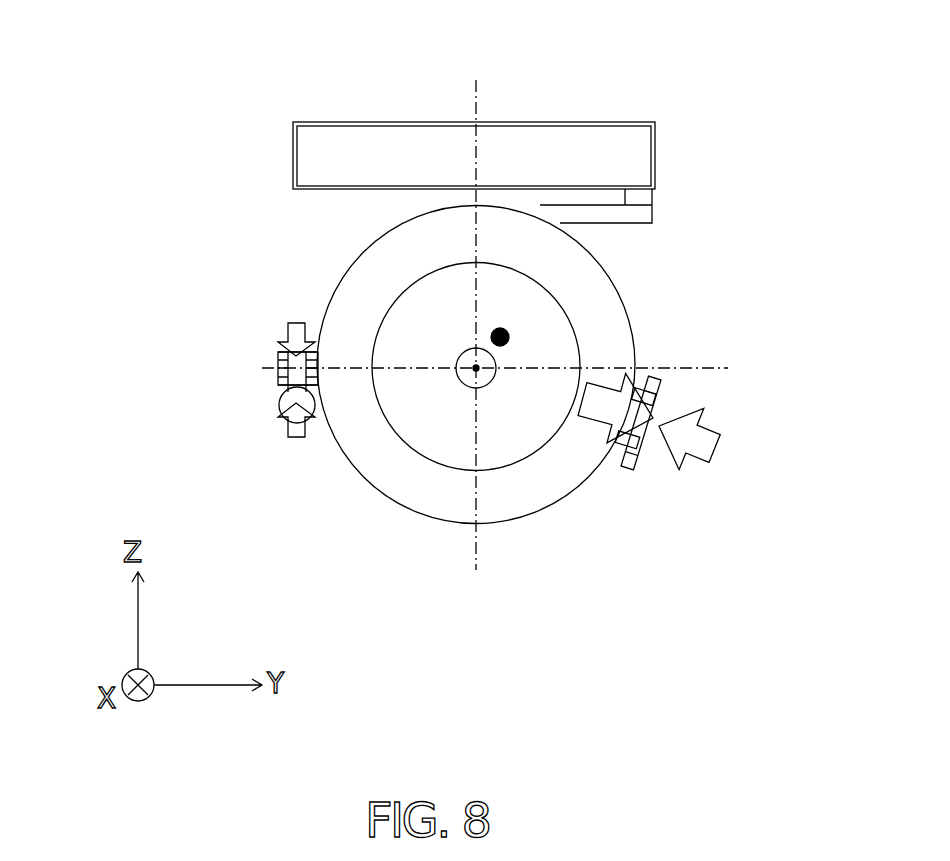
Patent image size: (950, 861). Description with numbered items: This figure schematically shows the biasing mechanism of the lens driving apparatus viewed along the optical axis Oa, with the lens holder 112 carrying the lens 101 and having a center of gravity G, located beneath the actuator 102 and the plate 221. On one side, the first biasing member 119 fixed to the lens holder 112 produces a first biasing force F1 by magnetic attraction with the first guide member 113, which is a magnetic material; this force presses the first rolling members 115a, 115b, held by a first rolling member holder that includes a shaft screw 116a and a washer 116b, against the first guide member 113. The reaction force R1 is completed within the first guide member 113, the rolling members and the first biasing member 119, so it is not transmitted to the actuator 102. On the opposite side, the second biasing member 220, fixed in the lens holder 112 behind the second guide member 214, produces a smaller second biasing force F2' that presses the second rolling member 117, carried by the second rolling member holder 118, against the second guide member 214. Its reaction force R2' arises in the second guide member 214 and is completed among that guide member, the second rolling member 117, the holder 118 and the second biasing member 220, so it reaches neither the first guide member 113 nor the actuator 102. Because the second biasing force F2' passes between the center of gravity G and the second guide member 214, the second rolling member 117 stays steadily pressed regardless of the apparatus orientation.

The actuator 102 is at (428, 132).
The plate 221 is at (652, 213).
The lens holder 112 is at (507, 512).
The lens 101 is at (505, 443).
The rotation axis Oa is at (467, 378).
The center of gravity G is at (503, 326).
The second biasing force F2' is at (195, 281).
The second biasing member 220 is at (280, 343).
The second rolling member holder 118 is at (278, 363).
The second rolling member 117 is at (278, 380).
The second guide member 214 is at (279, 399).
The reaction force R2' is at (186, 457).
The first biasing force F1 is at (628, 400).
The reaction force R1 is at (722, 433).
The first guide member 113 is at (714, 460).
The first rolling member 115a is at (661, 372).
The shaft screw 116a is at (658, 396).
The washer 116b is at (655, 458).
The first rolling member 115b is at (640, 466).
The first biasing member 119 is at (586, 418).